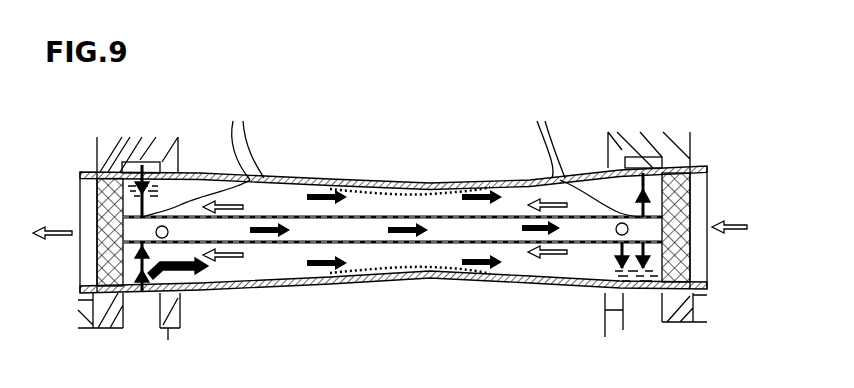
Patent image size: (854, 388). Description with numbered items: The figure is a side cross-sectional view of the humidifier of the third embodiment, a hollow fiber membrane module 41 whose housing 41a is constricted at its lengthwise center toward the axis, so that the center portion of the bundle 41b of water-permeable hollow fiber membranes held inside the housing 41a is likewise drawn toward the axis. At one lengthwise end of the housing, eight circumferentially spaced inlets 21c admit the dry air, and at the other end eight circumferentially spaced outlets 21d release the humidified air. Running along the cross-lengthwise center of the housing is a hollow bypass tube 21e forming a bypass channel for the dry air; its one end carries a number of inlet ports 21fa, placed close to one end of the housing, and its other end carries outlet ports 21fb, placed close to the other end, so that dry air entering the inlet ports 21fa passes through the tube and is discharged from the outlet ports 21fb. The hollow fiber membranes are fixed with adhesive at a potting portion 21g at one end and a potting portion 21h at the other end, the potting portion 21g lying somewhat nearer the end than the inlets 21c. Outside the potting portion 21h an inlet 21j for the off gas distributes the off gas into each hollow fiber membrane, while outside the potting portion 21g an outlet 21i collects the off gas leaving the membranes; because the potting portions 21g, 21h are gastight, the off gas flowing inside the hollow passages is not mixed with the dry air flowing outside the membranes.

The hollow fiber membrane module 41 is at (460, 150).
The housing 41a is at (362, 182).
The bundle of hollow fiber membranes 41b is at (415, 276).
The inlet 21c is at (160, 162).
The outlet 21d is at (688, 164).
The bypass tube 21e is at (265, 244).
The inlet port 21fa is at (207, 158).
The outlet port 21fb is at (575, 158).
The potting portion 21g is at (97, 171).
The potting portion 21h is at (692, 200).
The outlet for off gas flow 21i is at (82, 245).
The inlet for off gas 21j is at (695, 242).